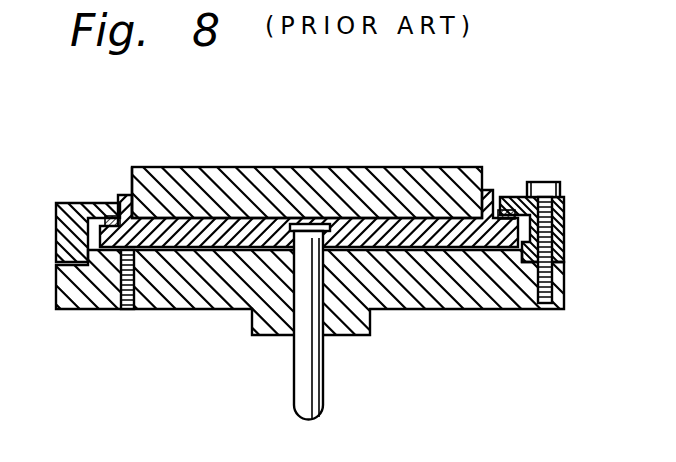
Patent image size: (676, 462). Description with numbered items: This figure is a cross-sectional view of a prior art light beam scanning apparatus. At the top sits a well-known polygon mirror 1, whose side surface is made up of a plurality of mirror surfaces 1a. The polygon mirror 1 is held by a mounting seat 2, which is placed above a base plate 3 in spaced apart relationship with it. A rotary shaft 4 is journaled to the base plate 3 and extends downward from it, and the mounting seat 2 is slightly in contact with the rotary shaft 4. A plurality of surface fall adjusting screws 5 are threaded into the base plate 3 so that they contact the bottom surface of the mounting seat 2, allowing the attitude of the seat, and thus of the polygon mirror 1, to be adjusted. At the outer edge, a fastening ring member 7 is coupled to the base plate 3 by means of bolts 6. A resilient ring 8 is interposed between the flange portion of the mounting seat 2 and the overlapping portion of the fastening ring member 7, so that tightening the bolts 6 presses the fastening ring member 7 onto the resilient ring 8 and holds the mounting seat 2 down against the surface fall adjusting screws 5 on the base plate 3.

The polygon mirror 1 is at (421, 178).
The mirror surfaces 1a is at (130, 178).
The mounting seat 2 is at (457, 215).
The base plate 3 is at (435, 288).
The rotary shaft 4 is at (305, 390).
The surface fall adjusting screws 5 is at (128, 313).
The bolts 6 is at (550, 182).
The fastening ring member 7 is at (566, 233).
The resilient ring 8 is at (503, 211).